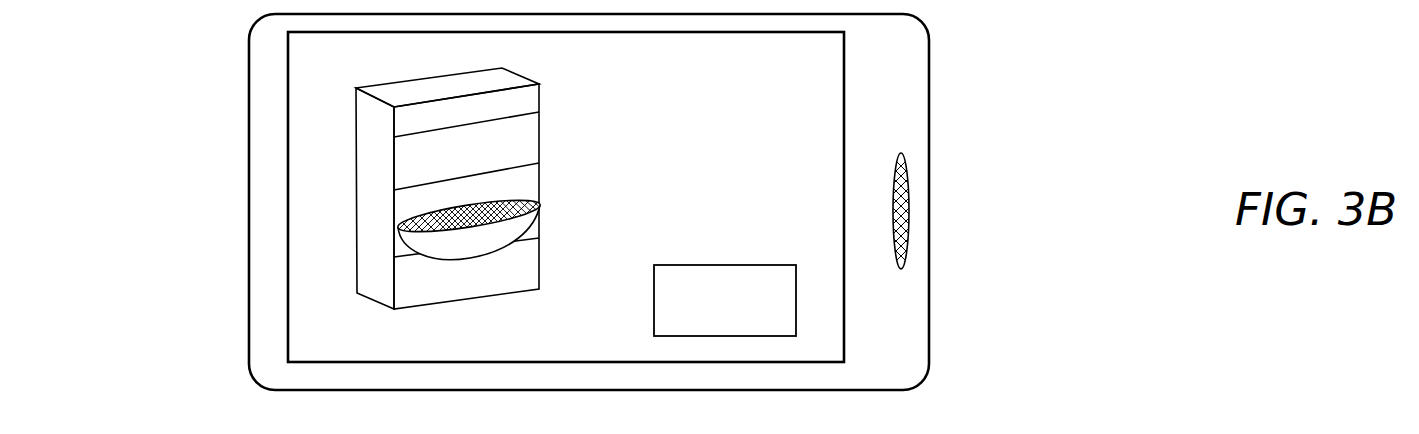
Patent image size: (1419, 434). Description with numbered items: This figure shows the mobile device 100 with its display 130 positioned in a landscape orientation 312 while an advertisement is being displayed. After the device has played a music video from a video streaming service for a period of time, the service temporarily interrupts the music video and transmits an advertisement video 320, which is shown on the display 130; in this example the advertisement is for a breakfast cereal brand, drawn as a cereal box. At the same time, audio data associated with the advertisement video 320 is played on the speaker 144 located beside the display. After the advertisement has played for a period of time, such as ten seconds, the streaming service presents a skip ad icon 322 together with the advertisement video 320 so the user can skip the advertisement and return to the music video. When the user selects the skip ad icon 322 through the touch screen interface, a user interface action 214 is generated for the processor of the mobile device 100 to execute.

The mobile device 100 is at (249, 88).
The display 130 is at (288, 152).
The speaker 144 is at (910, 207).
The landscape orientation 312 is at (808, 140).
The advertisement video 320 is at (360, 234).
The skip ad icon 322 is at (854, 325).
The user interface action 214 is at (733, 315).